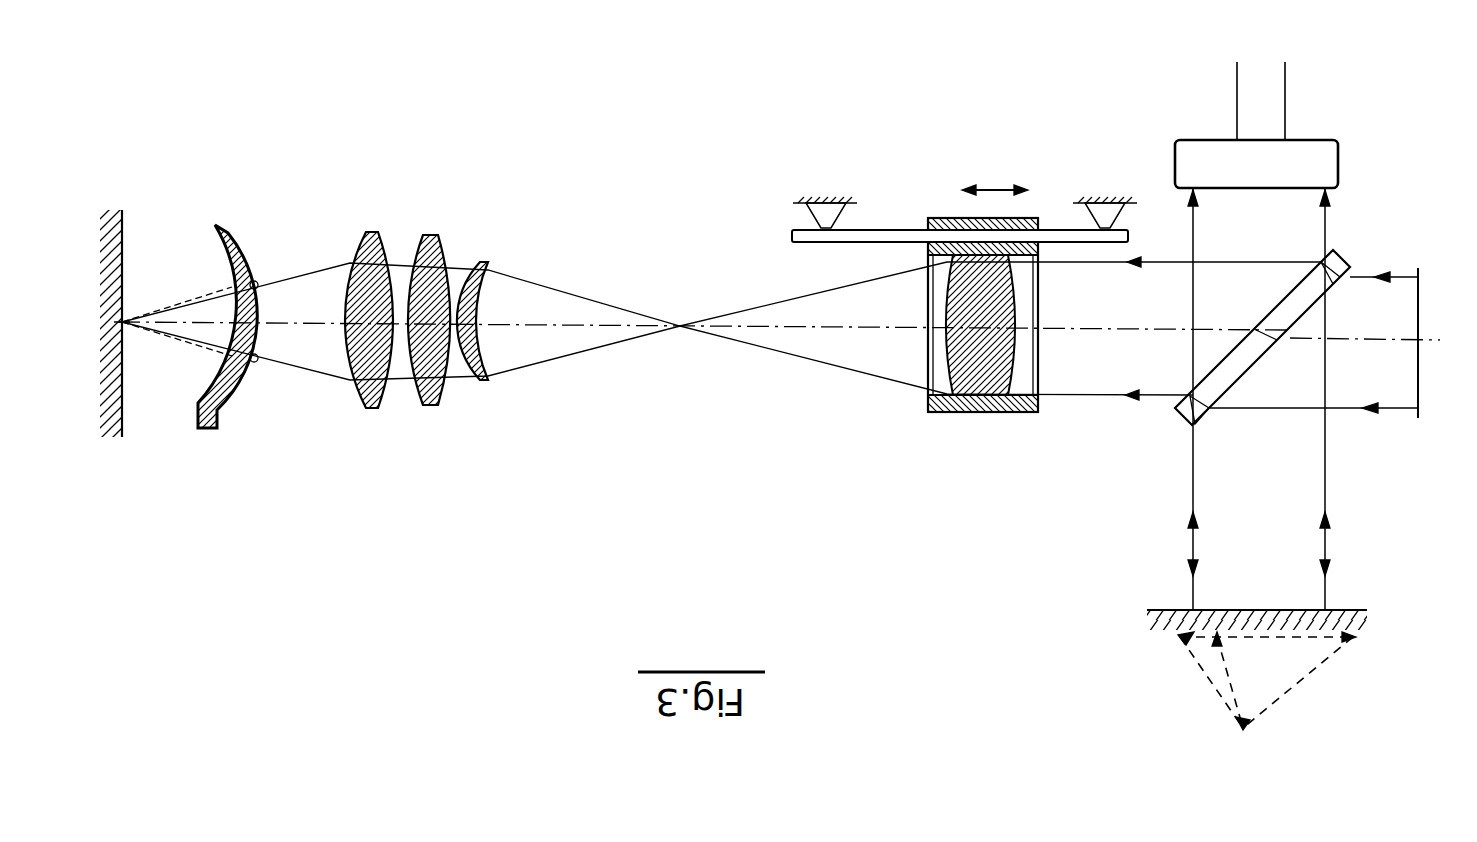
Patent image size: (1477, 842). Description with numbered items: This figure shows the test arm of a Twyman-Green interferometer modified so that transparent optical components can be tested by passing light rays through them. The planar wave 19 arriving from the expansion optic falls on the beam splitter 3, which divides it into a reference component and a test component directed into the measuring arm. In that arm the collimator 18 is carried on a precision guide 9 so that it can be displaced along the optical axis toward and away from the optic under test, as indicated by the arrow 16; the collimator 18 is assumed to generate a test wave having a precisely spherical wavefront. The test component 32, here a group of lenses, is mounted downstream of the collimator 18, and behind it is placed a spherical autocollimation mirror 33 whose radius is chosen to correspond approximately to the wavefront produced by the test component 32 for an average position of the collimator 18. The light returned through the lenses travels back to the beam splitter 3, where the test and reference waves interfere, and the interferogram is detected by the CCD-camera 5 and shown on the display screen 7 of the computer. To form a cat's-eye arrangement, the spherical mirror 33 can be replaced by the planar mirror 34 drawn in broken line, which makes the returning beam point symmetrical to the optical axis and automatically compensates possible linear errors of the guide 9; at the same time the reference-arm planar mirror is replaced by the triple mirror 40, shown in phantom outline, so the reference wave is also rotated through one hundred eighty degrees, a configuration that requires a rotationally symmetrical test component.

The beam splitter 3 is at (1180, 415).
The CCD-camera 5 is at (1212, 160).
The display screen 7 is at (1167, 608).
The precision guide 9 is at (885, 230).
The arrow 16 is at (992, 182).
The collimator 18 is at (977, 414).
The planar wave 19 is at (1418, 298).
The test component 32 is at (399, 416).
The spherical autocollimation mirror 33 is at (207, 240).
The planar mirror 34 is at (130, 214).
The triple mirror 40 is at (1200, 667).